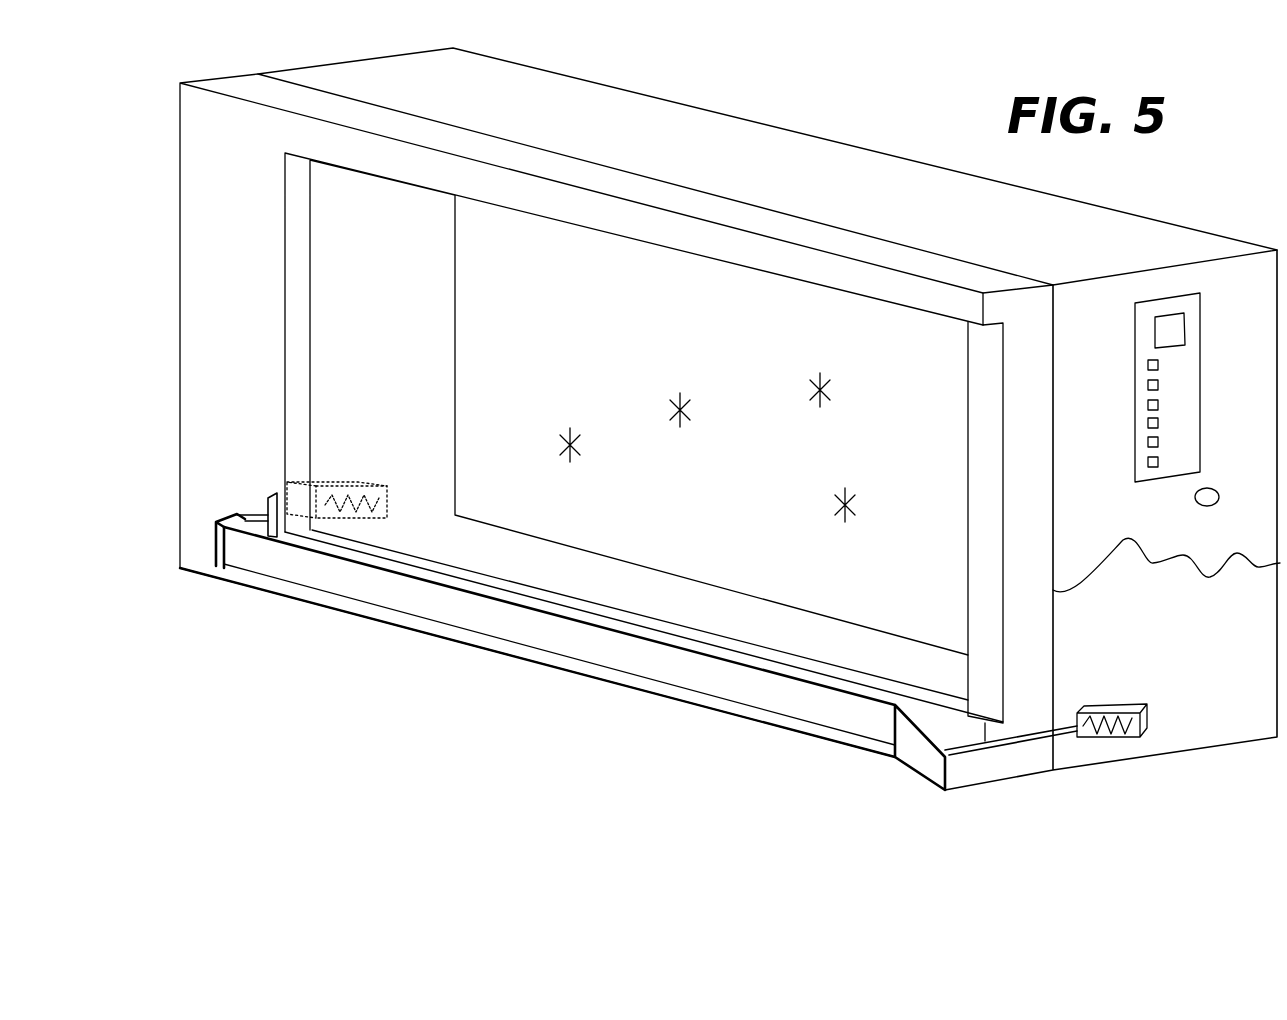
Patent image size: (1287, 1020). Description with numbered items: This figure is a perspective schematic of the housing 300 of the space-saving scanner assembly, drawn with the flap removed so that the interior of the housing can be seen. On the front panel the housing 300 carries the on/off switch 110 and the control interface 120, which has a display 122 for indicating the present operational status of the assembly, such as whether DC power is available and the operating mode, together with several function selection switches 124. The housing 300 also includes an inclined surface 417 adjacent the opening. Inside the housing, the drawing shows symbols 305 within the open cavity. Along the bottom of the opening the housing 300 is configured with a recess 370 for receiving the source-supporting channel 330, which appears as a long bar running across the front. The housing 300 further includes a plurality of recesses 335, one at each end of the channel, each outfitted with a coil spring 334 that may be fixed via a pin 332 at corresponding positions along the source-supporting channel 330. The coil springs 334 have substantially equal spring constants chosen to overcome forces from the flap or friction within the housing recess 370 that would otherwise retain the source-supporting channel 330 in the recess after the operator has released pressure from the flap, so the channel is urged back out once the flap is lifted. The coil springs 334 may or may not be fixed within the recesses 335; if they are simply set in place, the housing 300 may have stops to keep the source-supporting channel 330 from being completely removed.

The housing 300 is at (760, 160).
The control interface 120 is at (1163, 303).
The display 122 is at (1180, 335).
The function selection switches 124 is at (1160, 366).
The on/off switch 110 is at (1216, 490).
The inclined surface 417 is at (978, 445).
The interior lights 305 is at (677, 417).
The source-supporting channel 330 is at (285, 555).
The pin 332 is at (247, 518).
The recess 370 is at (256, 496).
The recesses 335 is at (357, 483).
The coil spring 334 is at (370, 497).